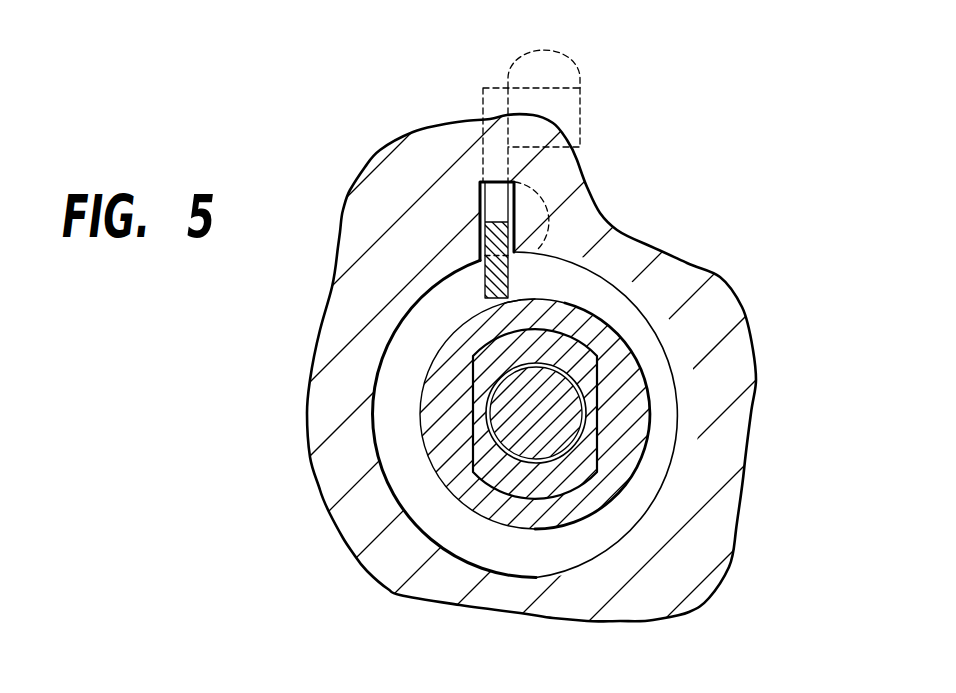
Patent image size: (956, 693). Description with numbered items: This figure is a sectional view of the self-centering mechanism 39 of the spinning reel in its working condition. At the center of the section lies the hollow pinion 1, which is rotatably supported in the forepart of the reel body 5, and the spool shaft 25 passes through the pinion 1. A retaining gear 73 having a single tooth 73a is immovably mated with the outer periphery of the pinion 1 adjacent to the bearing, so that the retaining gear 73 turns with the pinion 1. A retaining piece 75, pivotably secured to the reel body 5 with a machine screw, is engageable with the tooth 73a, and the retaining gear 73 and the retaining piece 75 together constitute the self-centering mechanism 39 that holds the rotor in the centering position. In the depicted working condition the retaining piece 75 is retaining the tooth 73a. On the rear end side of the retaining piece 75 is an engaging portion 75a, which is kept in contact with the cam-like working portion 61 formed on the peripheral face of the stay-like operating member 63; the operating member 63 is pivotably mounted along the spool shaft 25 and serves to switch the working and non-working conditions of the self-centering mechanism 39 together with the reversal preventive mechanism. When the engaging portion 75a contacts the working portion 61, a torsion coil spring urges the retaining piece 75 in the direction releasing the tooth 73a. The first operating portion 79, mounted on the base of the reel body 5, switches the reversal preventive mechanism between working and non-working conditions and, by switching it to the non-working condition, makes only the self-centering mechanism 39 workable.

The pinion 1 is at (500, 467).
The reel body 5 is at (330, 383).
The spool shaft 25 is at (558, 418).
The self-centering mechanism 39 is at (462, 313).
The working portion 61 is at (582, 97).
The operating member 63 is at (568, 52).
The retaining gear 73 is at (610, 507).
The tooth 73a is at (508, 298).
The retaining piece 75 is at (505, 230).
The engaging portion 75a is at (582, 128).
The first operating portion 79 is at (545, 230).